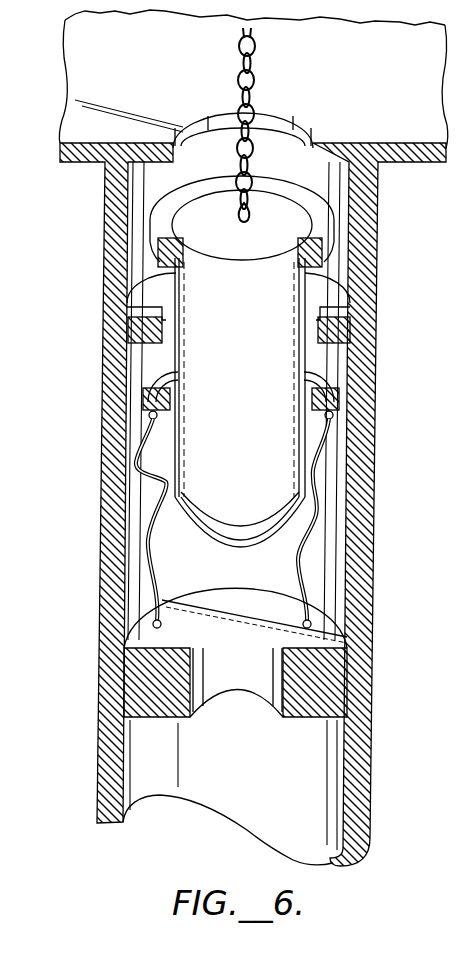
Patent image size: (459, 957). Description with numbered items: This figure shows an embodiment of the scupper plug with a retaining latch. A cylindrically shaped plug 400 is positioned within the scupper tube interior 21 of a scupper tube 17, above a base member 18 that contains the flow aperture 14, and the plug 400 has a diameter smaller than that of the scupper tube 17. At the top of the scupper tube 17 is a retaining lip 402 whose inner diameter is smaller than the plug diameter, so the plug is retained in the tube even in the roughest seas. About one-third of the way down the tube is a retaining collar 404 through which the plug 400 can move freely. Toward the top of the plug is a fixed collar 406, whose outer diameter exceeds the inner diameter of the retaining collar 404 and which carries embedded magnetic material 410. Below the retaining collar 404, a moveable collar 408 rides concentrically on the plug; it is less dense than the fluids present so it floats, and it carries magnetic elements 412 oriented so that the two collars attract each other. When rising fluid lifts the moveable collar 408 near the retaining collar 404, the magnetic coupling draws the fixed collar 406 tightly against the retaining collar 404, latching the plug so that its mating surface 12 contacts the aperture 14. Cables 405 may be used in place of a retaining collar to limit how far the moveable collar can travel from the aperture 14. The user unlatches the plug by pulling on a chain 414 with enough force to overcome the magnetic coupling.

The mating surface 12 is at (208, 544).
The flow aperture 14 is at (238, 641).
The scupper tube 17 is at (378, 226).
The base member 18 is at (200, 600).
The scupper tube interior 21 is at (247, 747).
The plug 400 is at (262, 351).
The retaining lip 402 is at (322, 147).
The retaining collar 404 is at (326, 308).
The cables 405 is at (150, 524).
The fixed collar 406 is at (298, 200).
The moveable collar 408 is at (148, 384).
The magnetic material 410 is at (297, 274).
The magnetic elements 412 is at (162, 391).
The chain 414 is at (262, 44).